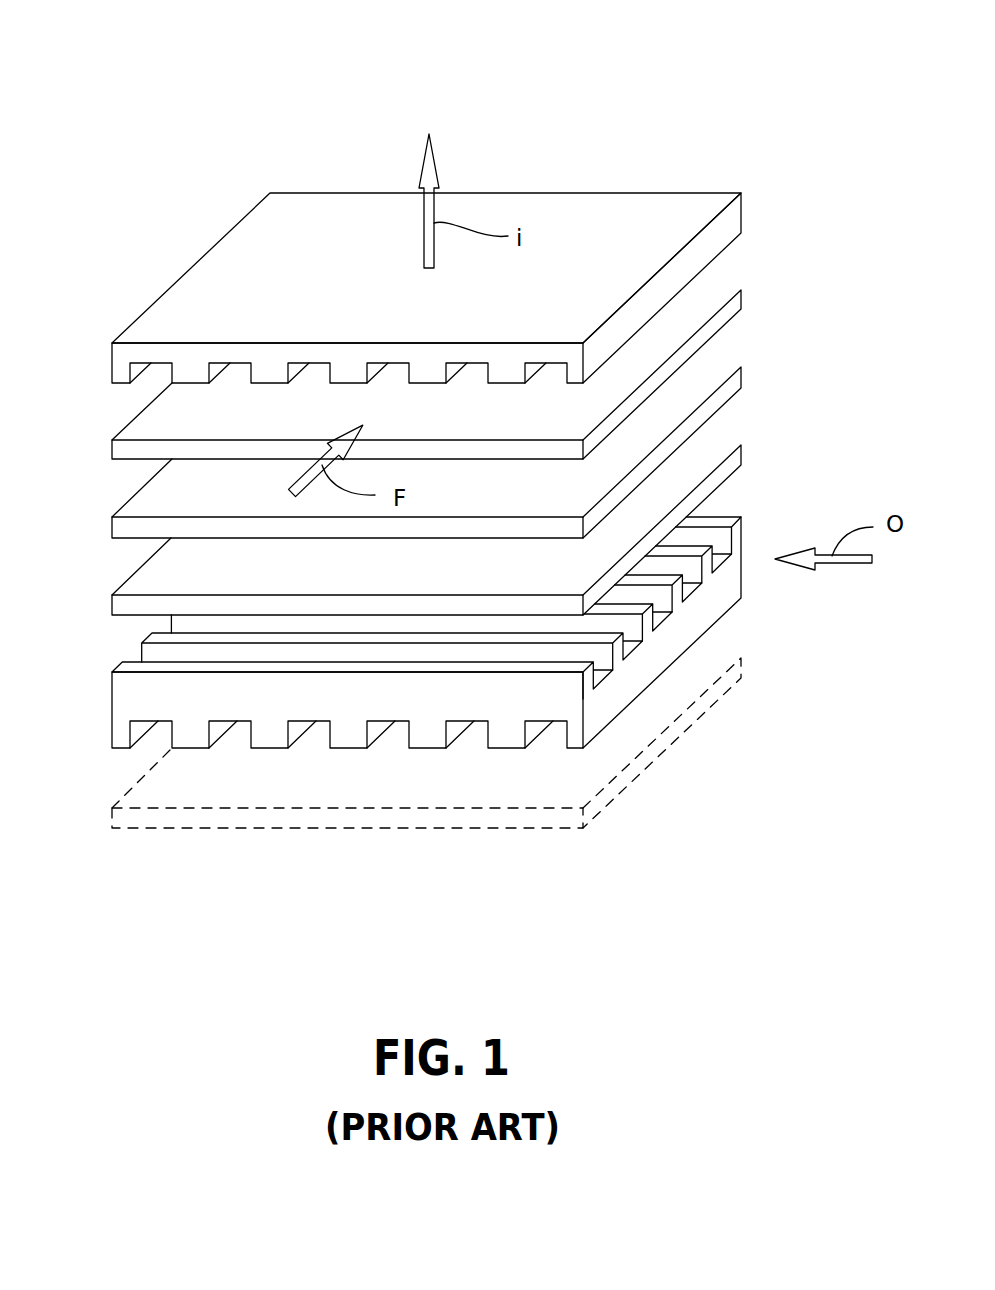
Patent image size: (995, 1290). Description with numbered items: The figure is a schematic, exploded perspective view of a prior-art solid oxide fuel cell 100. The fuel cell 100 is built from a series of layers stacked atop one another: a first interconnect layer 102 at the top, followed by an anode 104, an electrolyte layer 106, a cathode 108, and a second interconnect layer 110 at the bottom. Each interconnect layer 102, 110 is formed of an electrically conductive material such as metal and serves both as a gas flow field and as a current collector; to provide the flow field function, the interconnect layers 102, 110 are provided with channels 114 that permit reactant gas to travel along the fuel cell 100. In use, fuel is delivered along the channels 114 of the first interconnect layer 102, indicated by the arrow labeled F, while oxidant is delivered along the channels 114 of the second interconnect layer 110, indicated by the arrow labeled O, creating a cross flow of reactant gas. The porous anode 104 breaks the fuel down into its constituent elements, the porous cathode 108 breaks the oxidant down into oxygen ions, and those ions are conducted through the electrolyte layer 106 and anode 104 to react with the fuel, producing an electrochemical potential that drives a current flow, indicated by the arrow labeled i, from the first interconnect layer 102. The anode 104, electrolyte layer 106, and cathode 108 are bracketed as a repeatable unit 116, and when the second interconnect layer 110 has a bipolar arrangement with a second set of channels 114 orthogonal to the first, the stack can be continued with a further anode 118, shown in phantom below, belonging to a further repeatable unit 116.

The solid oxide fuel cell 100 is at (212, 122).
The first interconnect layer 102 is at (738, 217).
The anode 104 is at (738, 303).
The electrolyte layer 106 is at (738, 380).
The cathode 108 is at (738, 455).
The second interconnect layer 110 is at (737, 590).
The channels 114 is at (453, 371).
The repeatable unit 116 is at (92, 440).
The further anode 118 is at (737, 670).